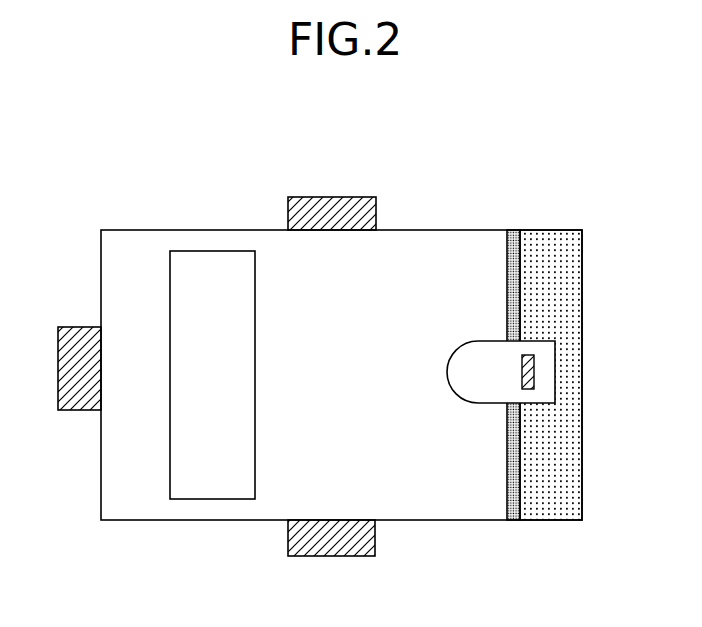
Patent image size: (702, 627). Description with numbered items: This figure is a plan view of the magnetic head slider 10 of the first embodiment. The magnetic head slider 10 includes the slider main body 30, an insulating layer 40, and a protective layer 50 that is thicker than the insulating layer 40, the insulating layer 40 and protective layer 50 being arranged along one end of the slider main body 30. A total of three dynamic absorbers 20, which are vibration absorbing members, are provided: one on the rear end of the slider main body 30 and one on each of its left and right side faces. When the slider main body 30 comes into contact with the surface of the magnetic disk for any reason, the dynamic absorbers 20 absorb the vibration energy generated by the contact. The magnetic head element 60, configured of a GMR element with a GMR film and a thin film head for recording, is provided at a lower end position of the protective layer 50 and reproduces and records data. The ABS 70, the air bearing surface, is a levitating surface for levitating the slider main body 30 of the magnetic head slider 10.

The magnetic head slider 10 is at (482, 163).
The dynamic absorber 20 is at (306, 197).
The slider main body 30 is at (472, 514).
The insulating layer 40 is at (514, 231).
The protective layer 50 is at (575, 250).
The magnetic head element 60 is at (536, 374).
The ABS (air bearing surface) 70 is at (190, 500).